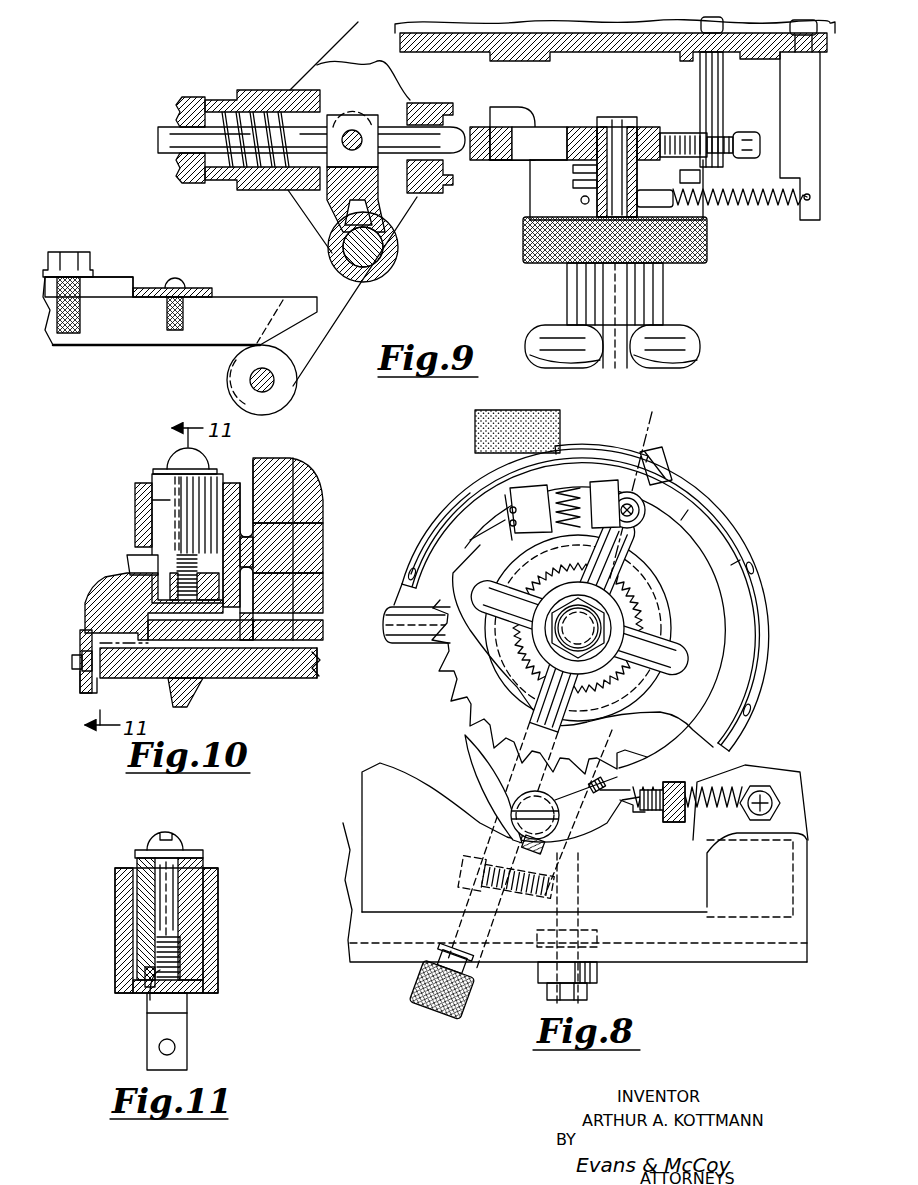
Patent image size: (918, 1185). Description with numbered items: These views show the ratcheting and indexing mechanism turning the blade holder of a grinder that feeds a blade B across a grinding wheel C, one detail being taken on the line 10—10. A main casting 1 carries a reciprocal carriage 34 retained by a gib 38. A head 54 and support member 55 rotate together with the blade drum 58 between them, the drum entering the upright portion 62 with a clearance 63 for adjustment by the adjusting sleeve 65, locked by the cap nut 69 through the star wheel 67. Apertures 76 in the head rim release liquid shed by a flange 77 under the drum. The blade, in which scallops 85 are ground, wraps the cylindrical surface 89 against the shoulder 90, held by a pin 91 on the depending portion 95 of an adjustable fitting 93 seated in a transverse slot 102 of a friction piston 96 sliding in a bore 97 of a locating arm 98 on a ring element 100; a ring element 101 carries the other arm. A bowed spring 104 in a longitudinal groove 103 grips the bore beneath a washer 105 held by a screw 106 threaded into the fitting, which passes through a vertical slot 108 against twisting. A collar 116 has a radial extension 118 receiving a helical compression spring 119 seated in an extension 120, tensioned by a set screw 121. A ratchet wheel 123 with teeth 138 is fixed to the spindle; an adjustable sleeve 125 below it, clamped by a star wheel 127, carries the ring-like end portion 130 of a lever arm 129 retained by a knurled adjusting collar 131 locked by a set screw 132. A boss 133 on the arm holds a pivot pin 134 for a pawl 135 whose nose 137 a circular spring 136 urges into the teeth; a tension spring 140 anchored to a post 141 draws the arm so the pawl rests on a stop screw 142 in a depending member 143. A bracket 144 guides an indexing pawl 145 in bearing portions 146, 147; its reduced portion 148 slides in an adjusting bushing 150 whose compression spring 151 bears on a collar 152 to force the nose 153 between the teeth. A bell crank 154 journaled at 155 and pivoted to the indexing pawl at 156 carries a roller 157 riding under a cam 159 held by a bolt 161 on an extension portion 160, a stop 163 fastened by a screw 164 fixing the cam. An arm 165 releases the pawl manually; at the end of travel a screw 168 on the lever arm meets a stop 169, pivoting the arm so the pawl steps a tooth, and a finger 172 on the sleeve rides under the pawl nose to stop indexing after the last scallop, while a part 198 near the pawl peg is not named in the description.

In FIG. 8, the main casting or body member 1 is at (683, 960).
In FIG. 8, the flanged hub 10 is at (648, 414).
In FIG. 9, the reciprocal carriage 34 is at (612, 56).
In FIG. 8, the gib 38 is at (745, 945).
In FIG. 8, the head 54 is at (769, 655).
In FIG. 8, the support member 55 is at (712, 681).
In FIG. 10, the blade backing member or drum 58 is at (208, 678).
In FIG. 8, the blade backing member or drum 58 is at (748, 612).
In FIG. 10, the upright portion 62 is at (309, 492).
In FIG. 10, the clearance 63 is at (296, 672).
In FIG. 8, the adjusting sleeve 65 is at (638, 596).
In FIG. 8, the star wheel 67 is at (681, 652).
In FIG. 8, the cap nut 69 is at (556, 620).
In FIG. 8, the apertures 76 is at (490, 467).
In FIG. 10, the circular flange 77 is at (195, 697).
In FIG. 8, the scallops or serrations 85 is at (418, 516).
In FIG. 10, the peripheral or cylindrical surface 89 is at (98, 680).
In FIG. 8, the shoulder or top surface 90 is at (717, 504).
In FIG. 10, the pin 91 is at (68, 647).
In FIG. 8, the pin 91 is at (638, 447).
In FIG. 10, the adjustable fitting 93 is at (100, 600).
In FIG. 11, the adjustable fitting 93 is at (188, 1031).
In FIG. 8, the adjustable fitting 93 is at (667, 470).
In FIG. 10, the depending portions 95 is at (80, 680).
In FIG. 10, the friction piston 96 is at (155, 491).
In FIG. 11, the friction piston 96 is at (146, 904).
In FIG. 10, the cylindrical bore 97 is at (157, 509).
In FIG. 11, the cylindrical bore 97 is at (205, 975).
In FIG. 10, the locating arm 98 is at (233, 483).
In FIG. 11, the locating arm 98 is at (218, 950).
In FIG. 10, the ring element 100 is at (280, 540).
In FIG. 10, the ring element 101 is at (280, 590).
In FIG. 11, the transverse slot 102 is at (148, 1000).
In FIG. 11, the longitudinal groove 103 is at (145, 985).
In FIG. 10, the bowed spring 104 is at (187, 525).
In FIG. 11, the bowed spring 104 is at (140, 938).
In FIG. 10, the washer 105 is at (153, 470).
In FIG. 11, the washer 105 is at (196, 850).
In FIG. 10, the screw 106 is at (205, 455).
In FIG. 11, the screw 106 is at (158, 840).
In FIG. 8, the screw 106 is at (641, 510).
In FIG. 10, the vertical slots 108 is at (135, 552).
In FIG. 10, the collar 116 is at (292, 467).
In FIG. 8, the collar 116 is at (700, 629).
In FIG. 8, the radial extension 118 is at (509, 493).
In FIG. 8, the helical compression spring 119 is at (556, 488).
In FIG. 8, the extension 120 is at (602, 481).
In FIG. 8, the set screw 121 is at (510, 528).
In FIG. 9, the ratchet wheel 123 is at (496, 188).
In FIG. 8, the ratchet wheel 123 is at (444, 669).
In FIG. 9, the adjustable sleeve 125 is at (538, 174).
In FIG. 9, the star wheel 127 is at (574, 303).
In FIG. 9, the lever arm 129 is at (650, 200).
In FIG. 9, the ring-like end portion 130 is at (533, 190).
In FIG. 9, the knurled adjusting collar 131 is at (691, 266).
In FIG. 9, the set screw 132 is at (604, 265).
In FIG. 9, the boss 133 is at (580, 206).
In FIG. 9, the pivot pin 134 is at (641, 122).
In FIG. 8, the pivot pin 134 is at (512, 812).
In FIG. 9, the pawl 135 is at (586, 124).
In FIG. 8, the pawl 135 is at (483, 784).
In FIG. 9, the circular spring 136 is at (556, 158).
In FIG. 9, the nose 137 is at (701, 177).
In FIG. 8, the nose 137 is at (612, 779).
In FIG. 9, the teeth 138 is at (494, 112).
In FIG. 8, the teeth 138 is at (452, 698).
In FIG. 9, the tension spring 140 is at (771, 207).
In FIG. 8, the tension spring 140 is at (703, 796).
In FIG. 9, the post 141 is at (802, 137).
In FIG. 8, the post 141 is at (772, 790).
In FIG. 9, the stop screw 142 is at (746, 132).
In FIG. 8, the stop screw 142 is at (647, 812).
In FIG. 9, the member 143 is at (723, 93).
In FIG. 8, the member 143 is at (675, 824).
In FIG. 9, the bracket 144 is at (322, 60).
In FIG. 9, the indexing pawl 145 is at (398, 126).
In FIG. 8, the indexing pawl 145 is at (400, 608).
In FIG. 9, the bearing portion 146 is at (247, 190).
In FIG. 9, the bearing portion 147 is at (398, 200).
In FIG. 9, the reduced diameter portion 148 is at (168, 128).
In FIG. 9, the adjusting bushing 150 is at (178, 170).
In FIG. 9, the helical compression spring 151 is at (262, 78).
In FIG. 9, the collar 152 is at (290, 190).
In FIG. 9, the nose 153 is at (480, 125).
In FIG. 8, the nose 153 is at (470, 604).
In FIG. 9, the bell crank 154 is at (352, 307).
In FIG. 9, the journal 155 is at (396, 268).
In FIG. 9, the pivot 156 is at (352, 130).
In FIG. 9, the roller 157 is at (300, 398).
In FIG. 9, the cam 159 is at (210, 350).
In FIG. 9, the extension portion 160 is at (115, 276).
In FIG. 9, the bolt 161 is at (70, 258).
In FIG. 9, the stop 163 is at (152, 286).
In FIG. 9, the screw 164 is at (190, 283).
In FIG. 8, the arm 165 is at (470, 975).
In FIG. 8, the screw 168 is at (562, 876).
In FIG. 8, the stop 169 is at (580, 905).
In FIG. 9, the finger 172 is at (592, 127).
In FIG. 8, the finger 172 is at (598, 737).
In FIG. 8, the peg pin 198 is at (640, 520).
In FIG. 10, the blade B is at (78, 672).
In FIG. 8, the blade B is at (456, 496).
In FIG. 8, the grinding wheel C is at (475, 432).